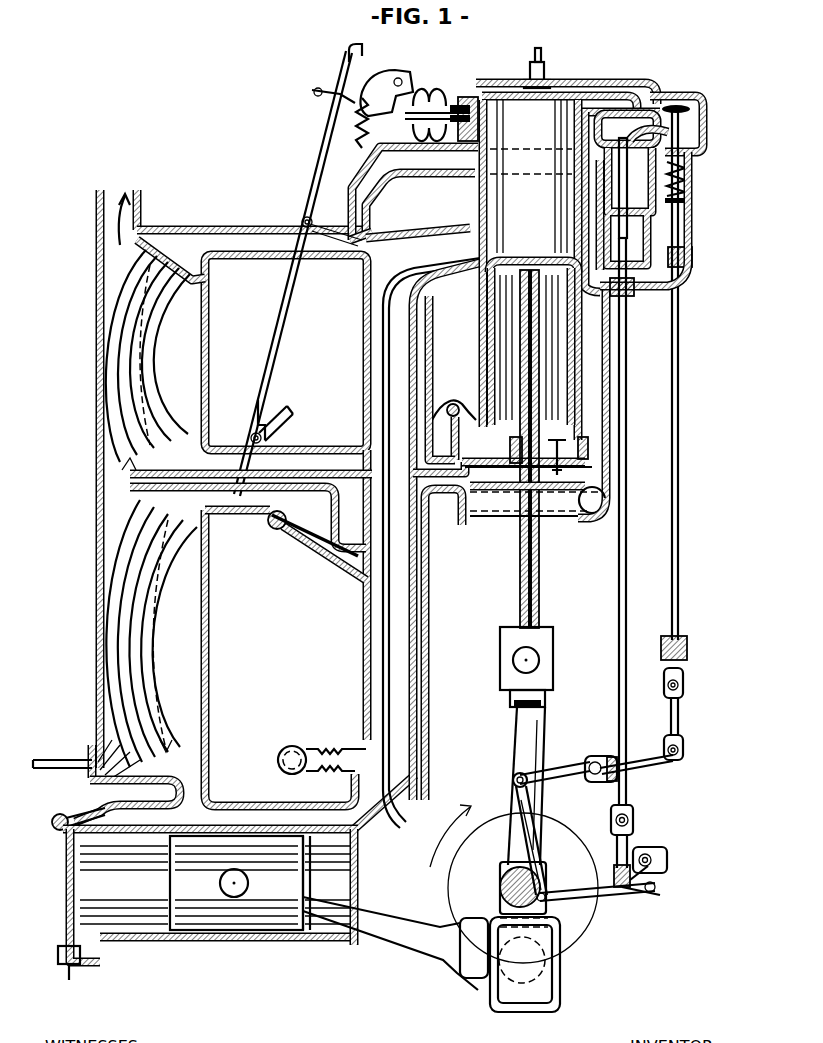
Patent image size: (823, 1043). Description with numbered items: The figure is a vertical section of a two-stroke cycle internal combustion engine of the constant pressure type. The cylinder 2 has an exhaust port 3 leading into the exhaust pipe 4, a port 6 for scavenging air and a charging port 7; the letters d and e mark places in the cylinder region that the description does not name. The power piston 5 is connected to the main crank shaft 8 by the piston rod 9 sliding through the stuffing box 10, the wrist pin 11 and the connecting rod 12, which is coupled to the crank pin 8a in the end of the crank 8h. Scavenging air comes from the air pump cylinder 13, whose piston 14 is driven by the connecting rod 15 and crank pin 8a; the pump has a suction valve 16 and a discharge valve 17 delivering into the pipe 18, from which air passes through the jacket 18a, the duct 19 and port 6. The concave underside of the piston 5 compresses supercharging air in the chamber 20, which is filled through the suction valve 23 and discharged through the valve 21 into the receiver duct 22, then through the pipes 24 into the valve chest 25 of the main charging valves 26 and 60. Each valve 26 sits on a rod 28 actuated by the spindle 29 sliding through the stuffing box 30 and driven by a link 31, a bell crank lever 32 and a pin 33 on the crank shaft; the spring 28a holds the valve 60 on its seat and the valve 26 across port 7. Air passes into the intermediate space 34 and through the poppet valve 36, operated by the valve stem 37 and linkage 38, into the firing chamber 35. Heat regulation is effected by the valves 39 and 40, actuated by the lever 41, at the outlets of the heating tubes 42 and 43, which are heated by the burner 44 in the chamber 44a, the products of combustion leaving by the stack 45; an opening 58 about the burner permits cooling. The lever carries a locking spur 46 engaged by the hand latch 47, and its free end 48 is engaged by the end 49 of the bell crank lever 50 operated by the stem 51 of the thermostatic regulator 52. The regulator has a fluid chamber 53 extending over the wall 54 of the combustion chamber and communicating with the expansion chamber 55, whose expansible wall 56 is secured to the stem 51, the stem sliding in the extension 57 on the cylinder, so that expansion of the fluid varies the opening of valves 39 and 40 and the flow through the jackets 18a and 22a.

The cylinder 2 is at (530, 270).
The exhaust port 3 is at (474, 245).
The exhaust pipe 4 is at (425, 543).
The power piston 5 is at (573, 388).
The scavenging air port 6 is at (639, 325).
The charging port 7 is at (592, 202).
The main crank shaft 8 is at (498, 892).
The crank pin 8a is at (500, 978).
The crank 8h is at (540, 925).
The piston rod 9 is at (519, 551).
The stuffing box 10 is at (524, 468).
The wrist pin 11 is at (512, 660).
The connecting rod 12 is at (515, 729).
The air pump cylinder 13 is at (192, 941).
The pump piston 14 is at (215, 883).
The connecting rod 15 is at (395, 935).
The suction valve 16 is at (66, 965).
The discharge valve 17 is at (64, 812).
The pipe 18 is at (326, 540).
The jacket 18a is at (430, 622).
The duct 19 is at (595, 513).
The compressor chamber 20 is at (523, 361).
The discharge valve 21 is at (461, 447).
The receiver duct 22 is at (450, 402).
The jacket 22a is at (433, 318).
The suction valve 23 is at (568, 428).
The pipes 24 is at (307, 213).
The valve chest 25 is at (655, 166).
The main charging valve 26 is at (652, 208).
The spindle extension 28 is at (630, 230).
The spring 28a is at (688, 188).
The spindle 29 is at (628, 326).
The stuffing box 30 is at (636, 292).
The link 31 is at (633, 840).
The bell crank lever 32 is at (660, 888).
The pin 33 is at (546, 897).
The intermediate space 34 is at (630, 100).
The firing chamber 35 is at (665, 94).
The poppet valve 36 is at (685, 105).
The valve stem 37 is at (680, 326).
The linkage 38 is at (681, 722).
The by-pass valve 39 is at (310, 550).
The by-pass valve 40 is at (368, 238).
The lever 41 is at (290, 306).
The heating tubes 42 is at (98, 662).
The heating tubes 43 is at (96, 396).
The burner 44 is at (90, 760).
The auxiliary heating chamber 44a is at (150, 642).
The stack 45 is at (128, 198).
The locking spur 46 is at (266, 402).
The latch 47 is at (288, 418).
The free end 48 is at (360, 46).
The lever end 49 is at (343, 85).
The bell crank lever 50 is at (388, 76).
The stem 51 is at (374, 120).
The thermostatic regulator 52 is at (466, 104).
The fluid chamber 53 is at (580, 76).
The wall 54 is at (610, 112).
The expansion chamber 55 is at (440, 142).
The expansible wall 56 is at (436, 88).
The extension 57 is at (465, 142).
The opening 58 is at (88, 769).
The valve 60 is at (670, 133).
The point d is at (478, 232).
The point e is at (578, 181).